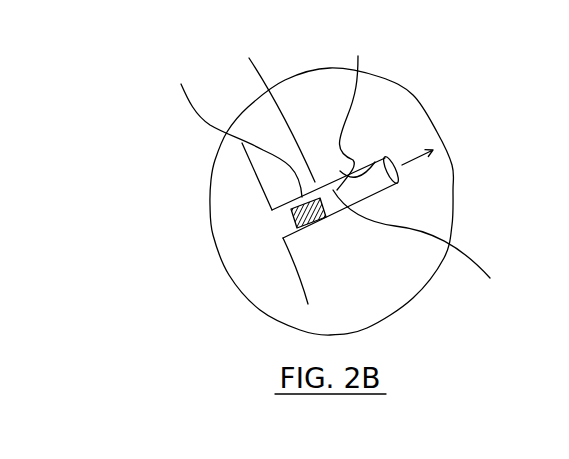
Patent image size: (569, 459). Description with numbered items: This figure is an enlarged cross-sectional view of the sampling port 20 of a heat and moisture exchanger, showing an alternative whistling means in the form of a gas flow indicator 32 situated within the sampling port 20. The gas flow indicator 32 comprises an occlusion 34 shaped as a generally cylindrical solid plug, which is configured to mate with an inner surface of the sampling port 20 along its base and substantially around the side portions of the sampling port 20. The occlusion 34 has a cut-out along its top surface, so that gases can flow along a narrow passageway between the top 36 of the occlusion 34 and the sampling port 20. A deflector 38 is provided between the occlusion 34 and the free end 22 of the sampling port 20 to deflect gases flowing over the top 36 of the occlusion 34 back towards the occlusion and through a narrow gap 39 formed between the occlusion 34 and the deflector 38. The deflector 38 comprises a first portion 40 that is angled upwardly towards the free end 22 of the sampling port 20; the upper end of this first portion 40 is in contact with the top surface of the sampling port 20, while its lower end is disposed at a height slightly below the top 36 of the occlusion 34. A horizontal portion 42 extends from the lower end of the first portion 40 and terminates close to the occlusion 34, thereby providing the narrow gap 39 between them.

The sampling port 20 is at (373, 187).
The free end 22 is at (397, 153).
The gas flow indicator 32 is at (272, 168).
The occlusion 34 is at (312, 234).
The top 36 is at (229, 128).
The deflector 38 is at (353, 109).
The narrow gap 39 is at (328, 205).
The first portion 40 is at (399, 150).
The horizontal portion 42 is at (418, 250).